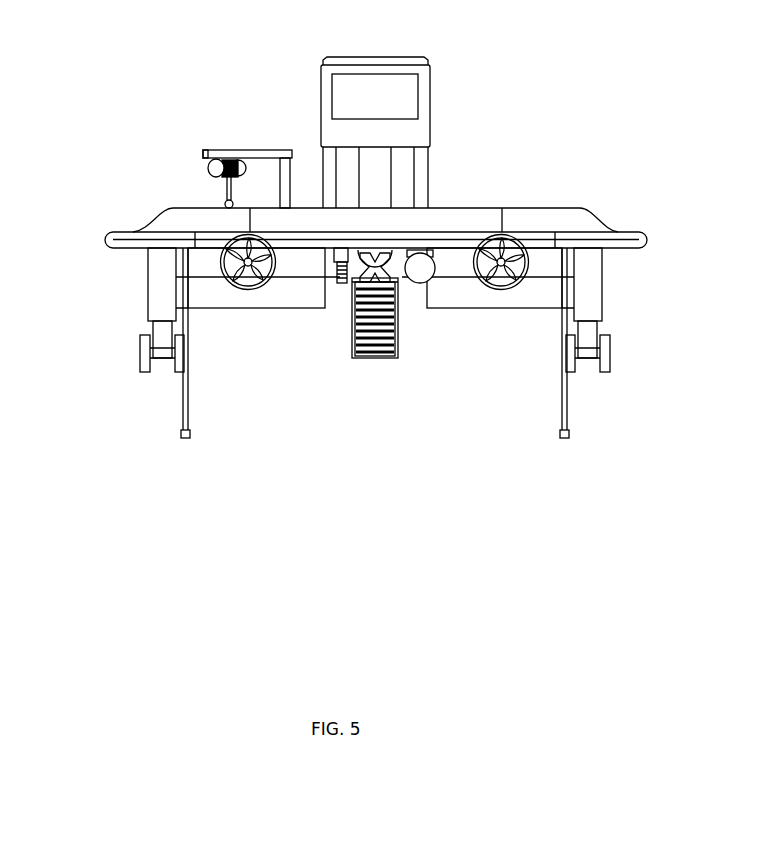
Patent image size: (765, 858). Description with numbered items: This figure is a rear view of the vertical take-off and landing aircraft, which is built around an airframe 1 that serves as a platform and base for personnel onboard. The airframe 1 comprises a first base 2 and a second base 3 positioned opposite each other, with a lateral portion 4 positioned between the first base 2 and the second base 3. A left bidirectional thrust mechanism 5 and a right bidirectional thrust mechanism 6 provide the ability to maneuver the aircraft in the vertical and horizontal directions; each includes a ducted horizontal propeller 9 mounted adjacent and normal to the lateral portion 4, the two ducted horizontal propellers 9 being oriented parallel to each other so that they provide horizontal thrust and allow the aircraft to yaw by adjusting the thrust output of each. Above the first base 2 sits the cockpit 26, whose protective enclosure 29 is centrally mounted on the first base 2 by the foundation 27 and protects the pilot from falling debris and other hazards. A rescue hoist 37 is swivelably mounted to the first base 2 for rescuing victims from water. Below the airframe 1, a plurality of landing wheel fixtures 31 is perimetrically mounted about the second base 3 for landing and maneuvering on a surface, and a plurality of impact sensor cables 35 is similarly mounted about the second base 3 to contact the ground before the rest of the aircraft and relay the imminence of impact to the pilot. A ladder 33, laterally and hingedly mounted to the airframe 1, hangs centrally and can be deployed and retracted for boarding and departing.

The airframe 1 is at (154, 182).
The first base 2 is at (118, 230).
The second base 3 is at (136, 252).
The lateral portion 4 is at (100, 239).
The left bidirectional thrust mechanism 5 is at (259, 322).
The right bidirectional thrust mechanism 6 is at (486, 318).
The ducted horizontal propeller 9 is at (254, 288).
The cockpit 26 is at (332, 42).
The foundation 27 is at (326, 180).
The protective enclosure 29 is at (326, 94).
The landing wheel fixtures 31 is at (141, 367).
The ladder 33 is at (398, 358).
The impact sensor cables 35 is at (190, 440).
The rescue hoist 37 is at (203, 158).